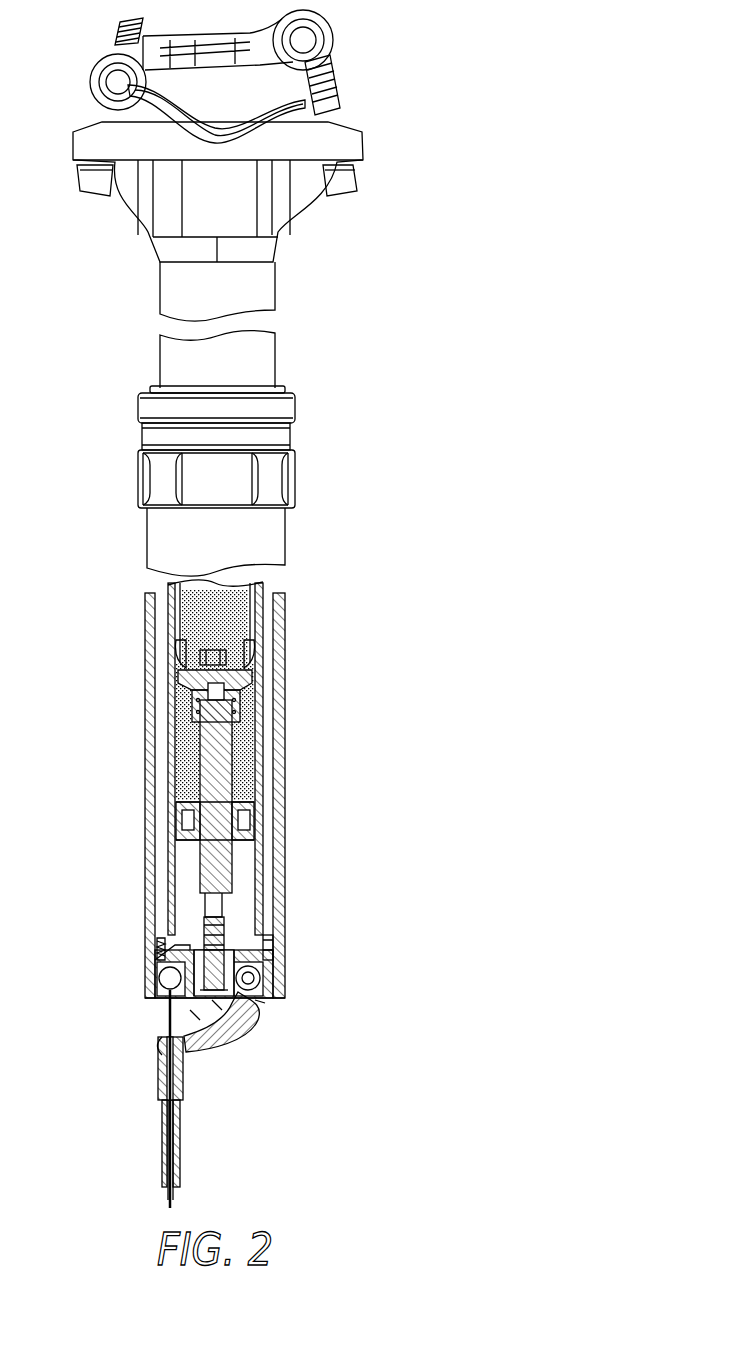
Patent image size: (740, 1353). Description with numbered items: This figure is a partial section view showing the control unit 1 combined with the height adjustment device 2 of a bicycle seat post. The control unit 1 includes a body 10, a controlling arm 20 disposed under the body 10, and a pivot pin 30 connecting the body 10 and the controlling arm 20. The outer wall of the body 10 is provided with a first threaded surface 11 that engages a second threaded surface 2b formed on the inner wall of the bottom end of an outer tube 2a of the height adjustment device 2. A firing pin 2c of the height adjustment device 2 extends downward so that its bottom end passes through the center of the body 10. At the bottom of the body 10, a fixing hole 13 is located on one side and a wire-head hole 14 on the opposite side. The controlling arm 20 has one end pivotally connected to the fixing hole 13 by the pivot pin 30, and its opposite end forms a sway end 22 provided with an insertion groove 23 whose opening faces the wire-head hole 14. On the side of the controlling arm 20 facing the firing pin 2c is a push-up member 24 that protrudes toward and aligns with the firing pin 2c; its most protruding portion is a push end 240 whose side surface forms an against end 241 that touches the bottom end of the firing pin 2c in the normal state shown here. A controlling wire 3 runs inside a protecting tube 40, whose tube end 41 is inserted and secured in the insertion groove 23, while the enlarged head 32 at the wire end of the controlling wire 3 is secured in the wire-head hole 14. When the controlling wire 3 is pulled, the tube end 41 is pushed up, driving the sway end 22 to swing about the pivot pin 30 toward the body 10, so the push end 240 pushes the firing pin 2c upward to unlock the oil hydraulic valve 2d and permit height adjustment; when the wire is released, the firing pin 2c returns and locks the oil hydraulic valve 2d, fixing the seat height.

The control unit 1 is at (258, 1066).
The height adjustment device 2 is at (328, 549).
The outer tube 2a is at (278, 775).
The second threaded surface 2b is at (273, 945).
The firing pin 2c is at (212, 757).
The oil hydraulic valve 2d is at (247, 662).
The controlling wire 3 is at (168, 1198).
The body 10 is at (272, 962).
The first threaded surface 11 is at (155, 940).
The fixing hole 13 is at (260, 985).
The wire-head hole 14 is at (157, 962).
The controlling arm 20 is at (245, 1012).
The sway end 22 is at (155, 1037).
The insertion groove 23 is at (156, 1047).
The push-up member 24 is at (197, 1028).
The pivot pin 30 is at (272, 998).
The enlarged head 32 is at (170, 978).
The protecting tube 40 is at (163, 1162).
The tube end 41 is at (165, 1073).
The push end 240 is at (220, 1005).
The against end 241 is at (262, 1003).